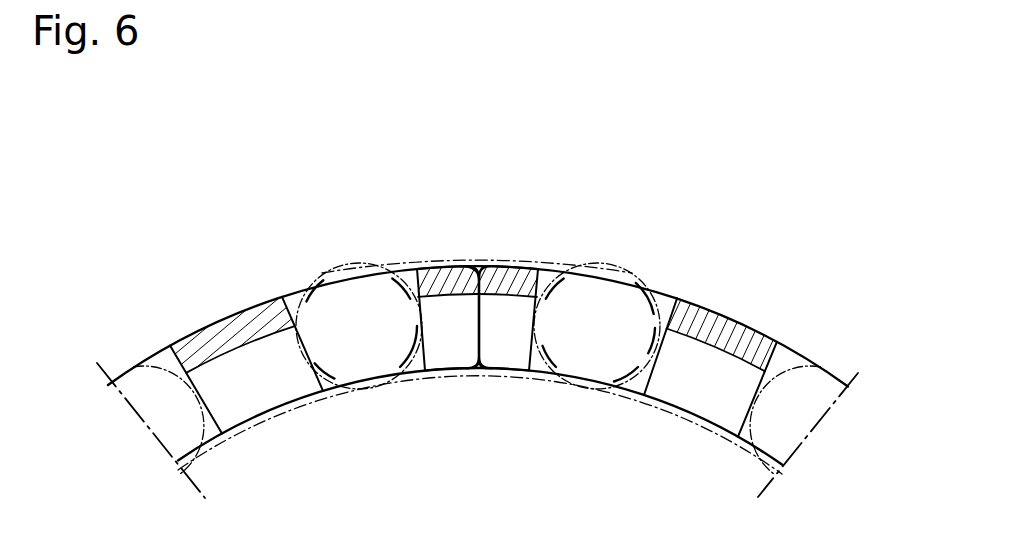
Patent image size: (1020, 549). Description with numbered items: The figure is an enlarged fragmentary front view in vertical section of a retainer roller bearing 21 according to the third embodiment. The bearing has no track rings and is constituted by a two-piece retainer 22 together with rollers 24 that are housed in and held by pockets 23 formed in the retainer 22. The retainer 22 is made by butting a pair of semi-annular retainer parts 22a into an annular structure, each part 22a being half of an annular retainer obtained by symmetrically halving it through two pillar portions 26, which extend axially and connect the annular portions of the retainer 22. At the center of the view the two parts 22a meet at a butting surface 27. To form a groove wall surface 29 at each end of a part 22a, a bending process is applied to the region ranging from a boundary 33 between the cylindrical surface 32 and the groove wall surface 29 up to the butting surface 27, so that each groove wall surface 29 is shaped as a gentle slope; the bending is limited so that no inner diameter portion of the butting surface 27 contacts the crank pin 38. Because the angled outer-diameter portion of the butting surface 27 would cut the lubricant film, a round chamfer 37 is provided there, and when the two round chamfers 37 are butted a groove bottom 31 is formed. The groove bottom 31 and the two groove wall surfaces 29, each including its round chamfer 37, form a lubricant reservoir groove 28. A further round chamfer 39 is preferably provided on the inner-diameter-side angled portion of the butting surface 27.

The retainer roller bearing 21 is at (828, 358).
The retainer 22 is at (775, 338).
The semi-annular retainer part 22a is at (203, 322).
The pocket 23 is at (321, 391).
The roller 24 is at (335, 272).
The pillar portion 26 is at (430, 272).
The butting surface 27 is at (478, 337).
The lubricant reservoir groove 28 is at (481, 266).
The groove wall surface 29 is at (448, 280).
The groove bottom 31 is at (483, 294).
The cylindrical surface 32 is at (253, 302).
The boundary 33 is at (375, 270).
The round chamfer 37 is at (478, 273).
The crank pin 38 is at (243, 433).
The round chamfer 39 is at (485, 362).